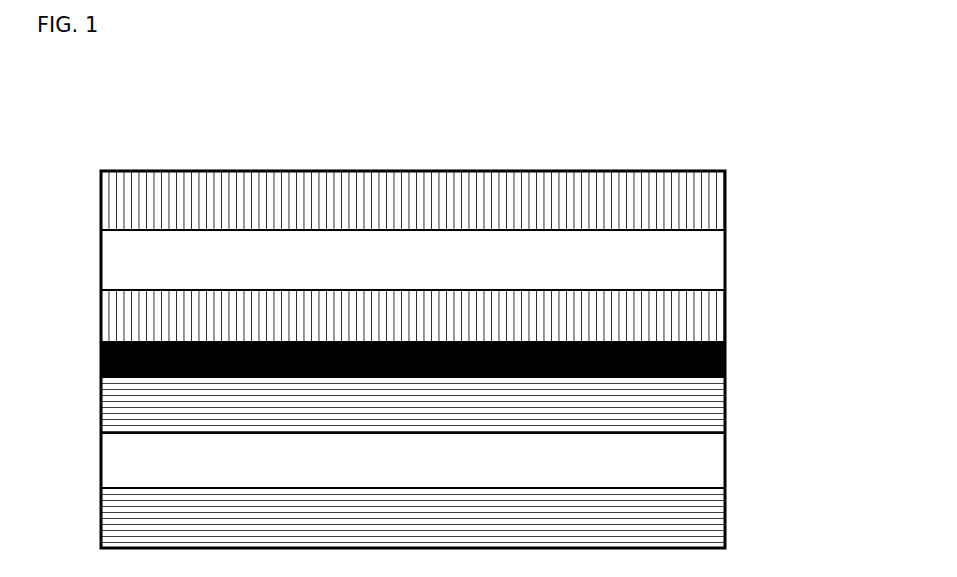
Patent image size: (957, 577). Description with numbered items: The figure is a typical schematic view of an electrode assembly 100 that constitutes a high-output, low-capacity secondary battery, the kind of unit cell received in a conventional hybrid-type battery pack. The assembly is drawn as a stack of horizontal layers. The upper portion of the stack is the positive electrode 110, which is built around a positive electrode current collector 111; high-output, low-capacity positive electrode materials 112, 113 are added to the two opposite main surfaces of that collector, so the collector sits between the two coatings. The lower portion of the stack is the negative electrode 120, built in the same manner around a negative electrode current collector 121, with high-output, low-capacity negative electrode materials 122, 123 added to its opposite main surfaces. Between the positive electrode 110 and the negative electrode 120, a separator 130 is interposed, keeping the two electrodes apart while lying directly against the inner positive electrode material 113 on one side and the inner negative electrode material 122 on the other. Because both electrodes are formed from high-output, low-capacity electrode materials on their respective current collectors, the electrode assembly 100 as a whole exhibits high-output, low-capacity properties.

The electrode assembly 100 is at (93, 135).
The positive electrode 110 is at (90, 175).
The positive electrode current collector 111 is at (740, 257).
The positive electrode material 112 is at (740, 197).
The positive electrode material 113 is at (740, 313).
The negative electrode 120 is at (90, 380).
The negative electrode current collector 121 is at (740, 459).
The negative electrode material 122 is at (740, 399).
The negative electrode material 123 is at (740, 516).
The separator 130 is at (740, 356).